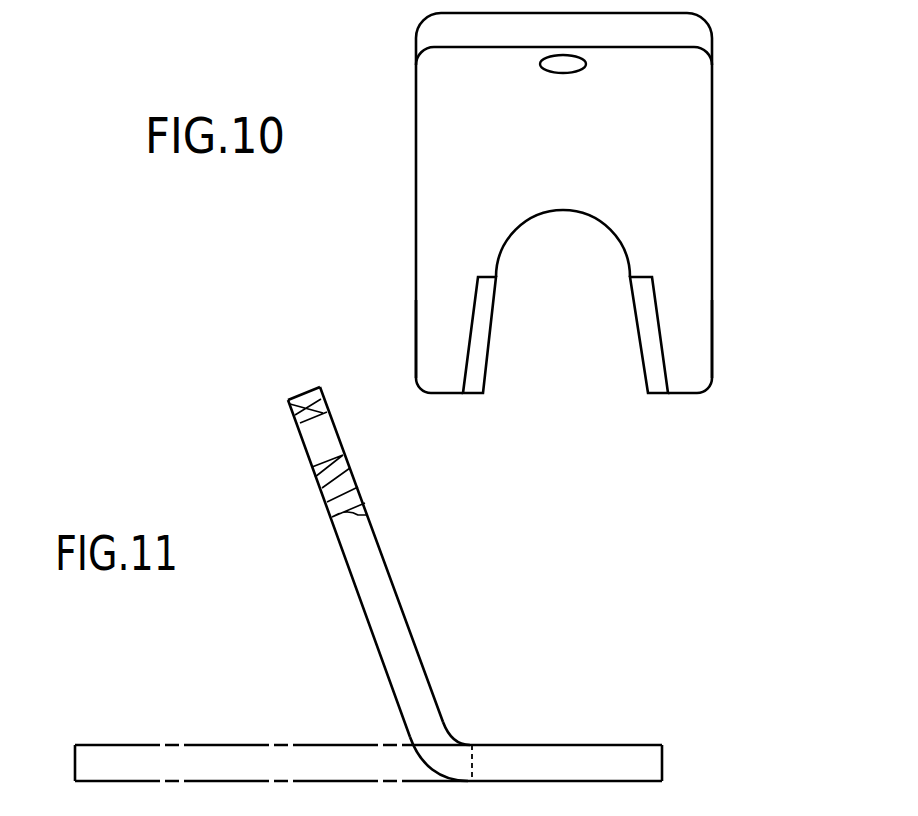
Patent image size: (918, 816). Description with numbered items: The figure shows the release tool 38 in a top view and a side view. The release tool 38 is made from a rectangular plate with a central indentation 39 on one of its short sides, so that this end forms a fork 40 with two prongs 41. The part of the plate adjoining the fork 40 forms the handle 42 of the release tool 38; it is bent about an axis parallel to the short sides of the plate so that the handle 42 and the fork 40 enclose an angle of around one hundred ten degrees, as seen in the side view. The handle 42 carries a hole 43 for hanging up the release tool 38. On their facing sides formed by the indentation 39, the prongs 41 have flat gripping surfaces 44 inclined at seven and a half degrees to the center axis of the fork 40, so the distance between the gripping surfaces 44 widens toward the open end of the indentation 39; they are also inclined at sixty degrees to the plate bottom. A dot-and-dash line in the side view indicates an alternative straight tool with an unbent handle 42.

In FIG. 10, the release tool 38 is at (712, 52).
In FIG. 11, the release tool 38 is at (365, 613).
In FIG. 10, the central indentation 39 is at (520, 232).
In FIG. 10, the fork 40 is at (643, 207).
In FIG. 11, the fork 40 is at (643, 760).
In FIG. 10, the prongs 41 is at (430, 316).
In FIG. 10, the handle 42 is at (695, 98).
In FIG. 11, the handle 42 is at (380, 550).
In FIG. 11, the hole 43 is at (307, 435).
In FIG. 10, the gripping surfaces 44 is at (478, 355).